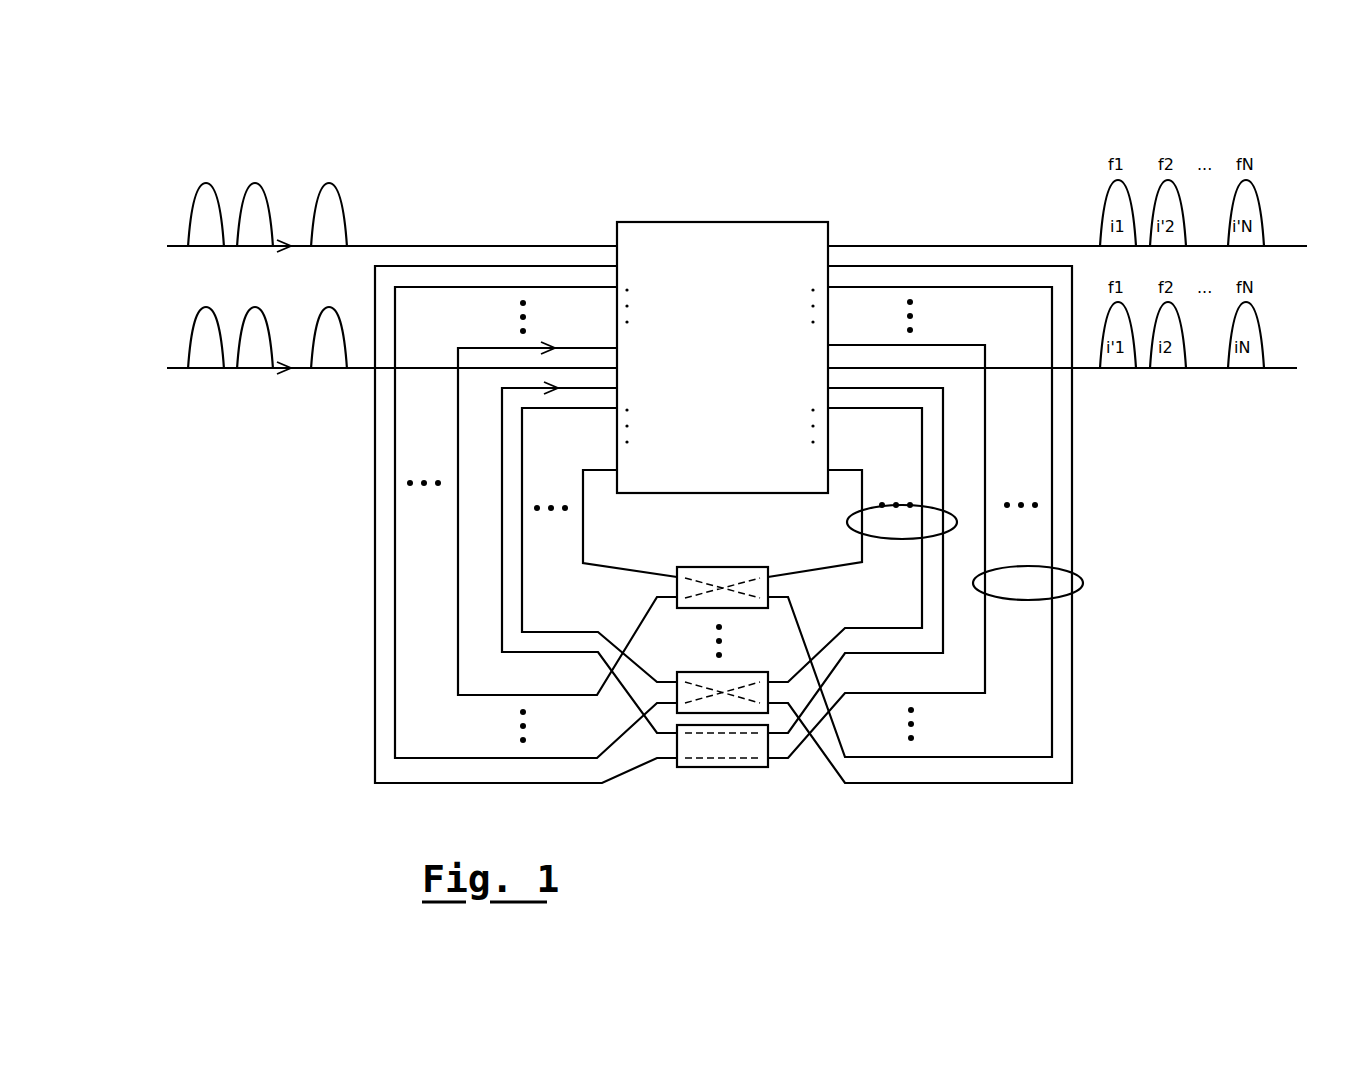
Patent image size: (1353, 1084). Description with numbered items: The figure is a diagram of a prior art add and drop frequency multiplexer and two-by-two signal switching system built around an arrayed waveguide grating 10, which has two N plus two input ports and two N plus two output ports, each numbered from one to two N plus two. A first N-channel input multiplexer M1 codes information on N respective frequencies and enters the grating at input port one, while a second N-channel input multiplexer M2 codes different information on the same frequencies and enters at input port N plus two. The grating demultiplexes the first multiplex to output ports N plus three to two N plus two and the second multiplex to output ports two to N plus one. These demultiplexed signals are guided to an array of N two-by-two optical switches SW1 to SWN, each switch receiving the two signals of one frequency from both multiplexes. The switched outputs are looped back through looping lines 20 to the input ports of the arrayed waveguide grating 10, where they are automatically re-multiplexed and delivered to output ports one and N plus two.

The arrayed waveguide grating 10 is at (731, 221).
The looping lines 20 is at (898, 540).
The first 2×2 optical switch SW1 is at (732, 767).
The N-th 2×2 optical switch SWN is at (730, 567).
The first N-channel input multiplexer M1 is at (167, 247).
The second N-channel input multiplexer M2 is at (167, 369).